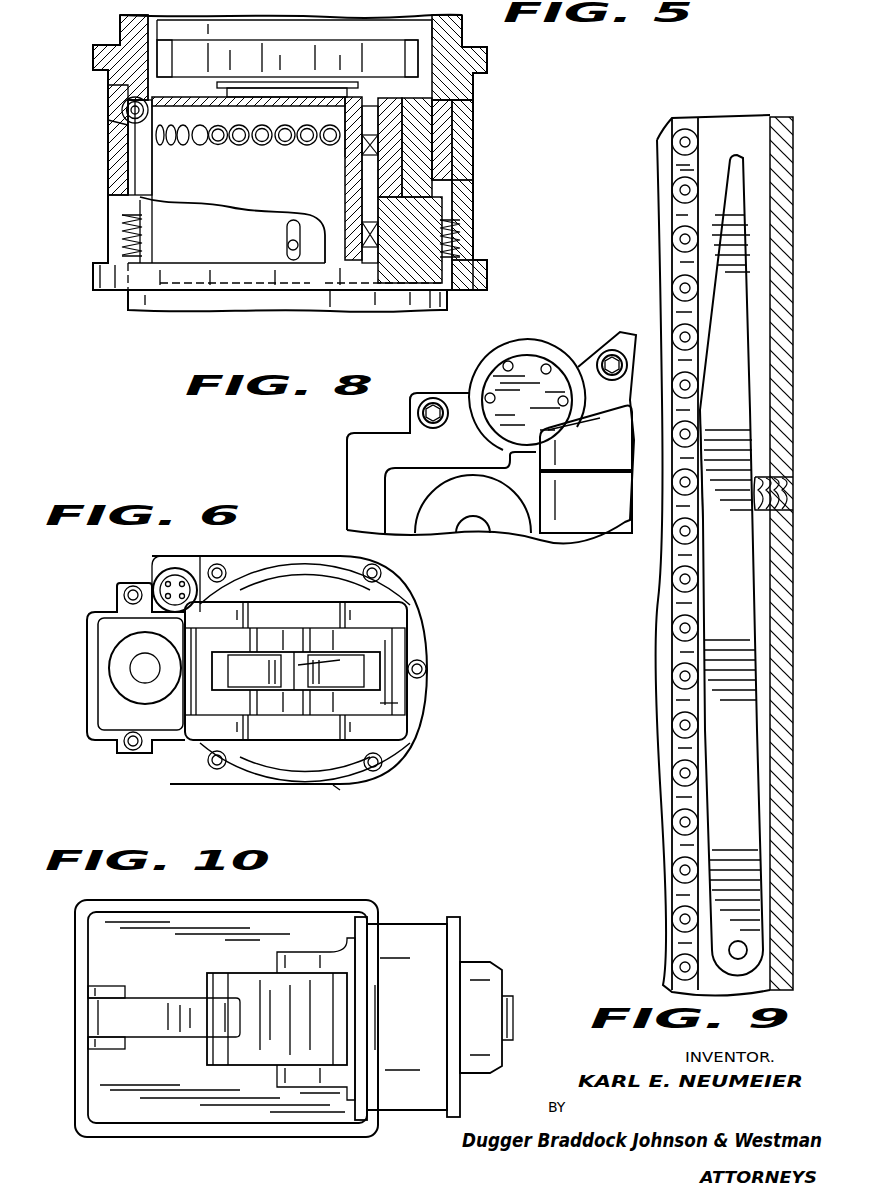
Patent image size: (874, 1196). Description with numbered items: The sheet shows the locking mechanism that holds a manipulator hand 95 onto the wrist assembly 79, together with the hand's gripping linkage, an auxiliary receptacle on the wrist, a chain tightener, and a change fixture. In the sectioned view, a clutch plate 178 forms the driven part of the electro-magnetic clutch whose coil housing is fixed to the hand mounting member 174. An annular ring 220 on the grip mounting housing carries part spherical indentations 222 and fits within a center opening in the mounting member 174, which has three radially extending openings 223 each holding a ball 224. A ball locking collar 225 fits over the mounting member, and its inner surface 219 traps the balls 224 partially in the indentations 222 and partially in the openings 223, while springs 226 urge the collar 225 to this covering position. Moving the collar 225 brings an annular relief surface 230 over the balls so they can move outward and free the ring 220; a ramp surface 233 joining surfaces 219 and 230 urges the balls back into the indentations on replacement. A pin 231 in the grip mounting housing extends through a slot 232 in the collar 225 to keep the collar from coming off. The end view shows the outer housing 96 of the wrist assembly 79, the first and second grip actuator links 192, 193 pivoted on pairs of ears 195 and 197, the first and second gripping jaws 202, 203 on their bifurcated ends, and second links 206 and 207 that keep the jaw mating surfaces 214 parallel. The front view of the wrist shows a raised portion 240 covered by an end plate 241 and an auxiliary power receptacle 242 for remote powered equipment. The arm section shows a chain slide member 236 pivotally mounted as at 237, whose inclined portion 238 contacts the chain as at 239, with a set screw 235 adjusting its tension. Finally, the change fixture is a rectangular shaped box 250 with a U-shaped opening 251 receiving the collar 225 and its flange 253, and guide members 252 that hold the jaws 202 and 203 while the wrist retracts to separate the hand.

In FIG. 5, the hand mounting member 174 is at (128, 30).
In FIG. 5, the clutch plate 178 is at (418, 68).
In FIG. 5, the annular relief surface 230 is at (110, 95).
In FIG. 5, the ball 224 is at (130, 112).
In FIG. 5, the ramp surface 233 is at (124, 125).
In FIG. 5, the inner surface 219 is at (152, 181).
In FIG. 5, the part spherical indentations 222 is at (262, 145).
In FIG. 5, the radially extending openings 223 is at (150, 101).
In FIG. 5, the ball locking collar 225 is at (128, 240).
In FIG. 10, the ball locking collar 225 is at (432, 1053).
In FIG. 5, the springs 226 is at (460, 224).
In FIG. 5, the slot 232 is at (287, 228).
In FIG. 5, the pin 231 is at (290, 245).
In FIG. 5, the annular ring 220 is at (440, 106).
In FIG. 10, the annular ring 220 is at (480, 962).
In FIG. 8, the auxiliary power receptacle 242 is at (545, 416).
In FIG. 6, the auxiliary power receptacle 242 is at (160, 580).
In FIG. 8, the raised portion 240 is at (362, 482).
In FIG. 6, the raised portion 240 is at (88, 673).
In FIG. 8, the end plate 241 is at (490, 522).
In FIG. 6, the end plate 241 is at (142, 664).
In FIG. 6, the ears 195 is at (223, 615).
In FIG. 6, the first grip actuator link 192 is at (272, 638).
In FIG. 6, the second grip actuator link 193 is at (320, 640).
In FIG. 6, the ears 197 is at (383, 612).
In FIG. 6, the mating surfaces 214 is at (303, 663).
In FIG. 6, the second link 207 is at (397, 663).
In FIG. 6, the outer housing 96 is at (425, 685).
In FIG. 6, the hand 95 is at (392, 707).
In FIG. 10, the hand 95 is at (412, 910).
In FIG. 6, the second link 206 is at (197, 700).
In FIG. 6, the wrist assembly 79 is at (338, 797).
In FIG. 6, the first gripping jaw 202 is at (265, 680).
In FIG. 6, the second gripping jaw 203 is at (352, 680).
In FIG. 10, the second gripping jaw 203 is at (175, 1003).
In FIG. 10, the rectangular shaped box 250 is at (335, 900).
In FIG. 10, the guide members 252 is at (110, 990).
In FIG. 10, the flange 253 is at (370, 1006).
In FIG. 10, the U-shaped opening 251 is at (385, 1110).
In FIG. 9, the inclined portion 238 is at (722, 178).
In FIG. 9, the contact point 239 is at (703, 420).
In FIG. 9, the set screw 235 is at (765, 512).
In FIG. 9, the chain slide member 236 is at (733, 598).
In FIG. 9, the pivot 237 is at (730, 950).